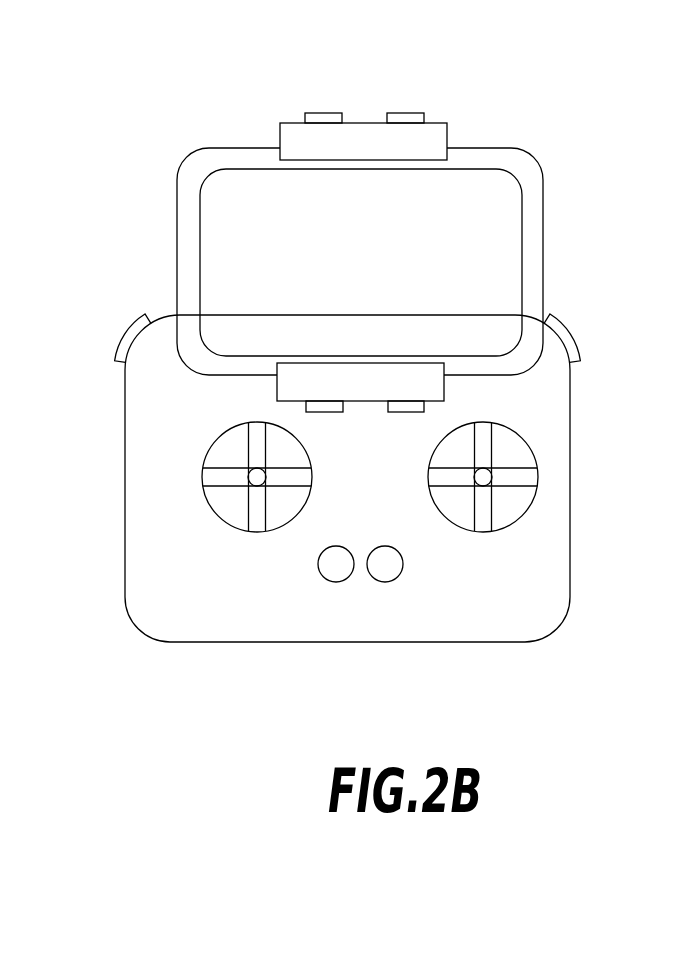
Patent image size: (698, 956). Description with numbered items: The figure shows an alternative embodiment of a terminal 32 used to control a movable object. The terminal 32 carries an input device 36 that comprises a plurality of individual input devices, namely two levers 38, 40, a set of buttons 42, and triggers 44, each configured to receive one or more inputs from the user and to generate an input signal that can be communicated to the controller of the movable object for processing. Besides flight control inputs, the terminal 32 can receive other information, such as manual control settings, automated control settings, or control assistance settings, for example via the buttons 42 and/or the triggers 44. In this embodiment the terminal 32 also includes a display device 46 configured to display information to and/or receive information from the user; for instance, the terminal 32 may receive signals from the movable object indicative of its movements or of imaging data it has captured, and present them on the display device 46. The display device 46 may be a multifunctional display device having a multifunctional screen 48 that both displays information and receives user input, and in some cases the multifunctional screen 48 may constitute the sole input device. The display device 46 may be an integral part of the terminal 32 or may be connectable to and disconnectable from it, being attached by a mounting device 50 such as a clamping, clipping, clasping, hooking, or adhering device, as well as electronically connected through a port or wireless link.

The terminal 32 is at (347, 491).
The input device 36 is at (610, 315).
The lever 38 is at (486, 483).
The lever 40 is at (257, 481).
The buttons 42 is at (308, 578).
The triggers 44 is at (146, 314).
The display device 46 is at (538, 153).
The multifunctional screen 48 is at (375, 277).
The mounting device 50 is at (280, 137).